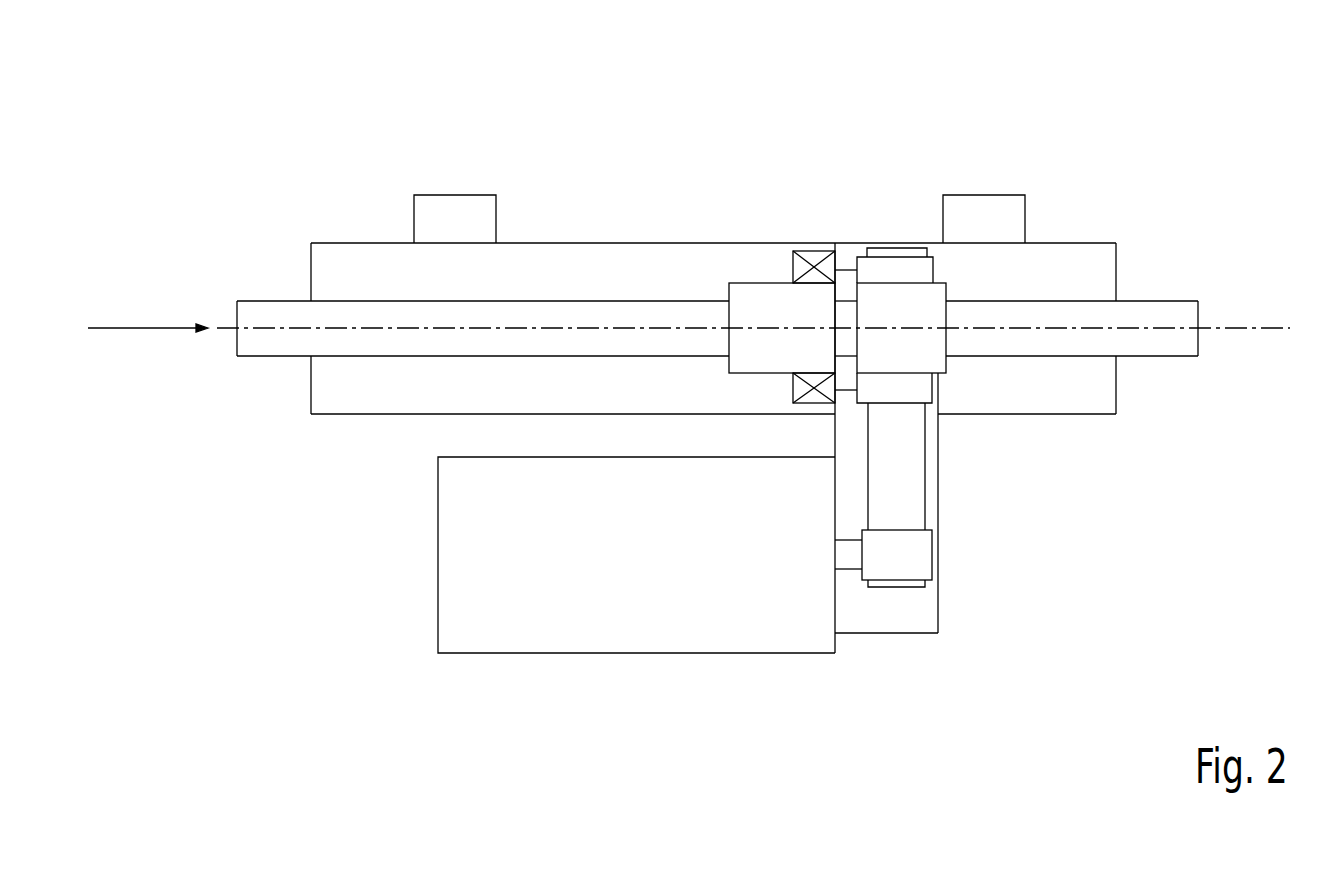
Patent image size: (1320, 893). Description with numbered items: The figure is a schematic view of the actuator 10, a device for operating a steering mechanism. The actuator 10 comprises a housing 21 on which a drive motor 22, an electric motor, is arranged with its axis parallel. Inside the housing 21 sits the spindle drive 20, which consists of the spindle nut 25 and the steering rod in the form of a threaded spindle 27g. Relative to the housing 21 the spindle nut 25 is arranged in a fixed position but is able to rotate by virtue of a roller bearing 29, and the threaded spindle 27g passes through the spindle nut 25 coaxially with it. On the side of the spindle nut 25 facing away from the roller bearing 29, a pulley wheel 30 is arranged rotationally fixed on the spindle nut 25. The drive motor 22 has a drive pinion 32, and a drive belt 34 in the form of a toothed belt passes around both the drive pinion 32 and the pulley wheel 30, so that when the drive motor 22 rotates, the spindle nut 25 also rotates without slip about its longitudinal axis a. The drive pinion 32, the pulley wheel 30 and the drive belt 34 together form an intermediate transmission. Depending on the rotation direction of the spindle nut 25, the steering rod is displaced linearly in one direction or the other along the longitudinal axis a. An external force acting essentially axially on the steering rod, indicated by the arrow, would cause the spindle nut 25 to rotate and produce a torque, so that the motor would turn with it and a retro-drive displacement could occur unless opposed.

The actuator 10 is at (590, 132).
The spindle drive 20 is at (801, 207).
The housing 21 is at (350, 213).
The drive motor 22 is at (482, 633).
The spindle nut 25 is at (766, 298).
The threaded spindle 27g is at (1072, 318).
The roller bearing 29 is at (822, 262).
The pulley wheel 30 is at (910, 265).
The drive pinion 32 is at (895, 570).
The drive belt 34 is at (900, 477).
The longitudinal axis a is at (1275, 330).